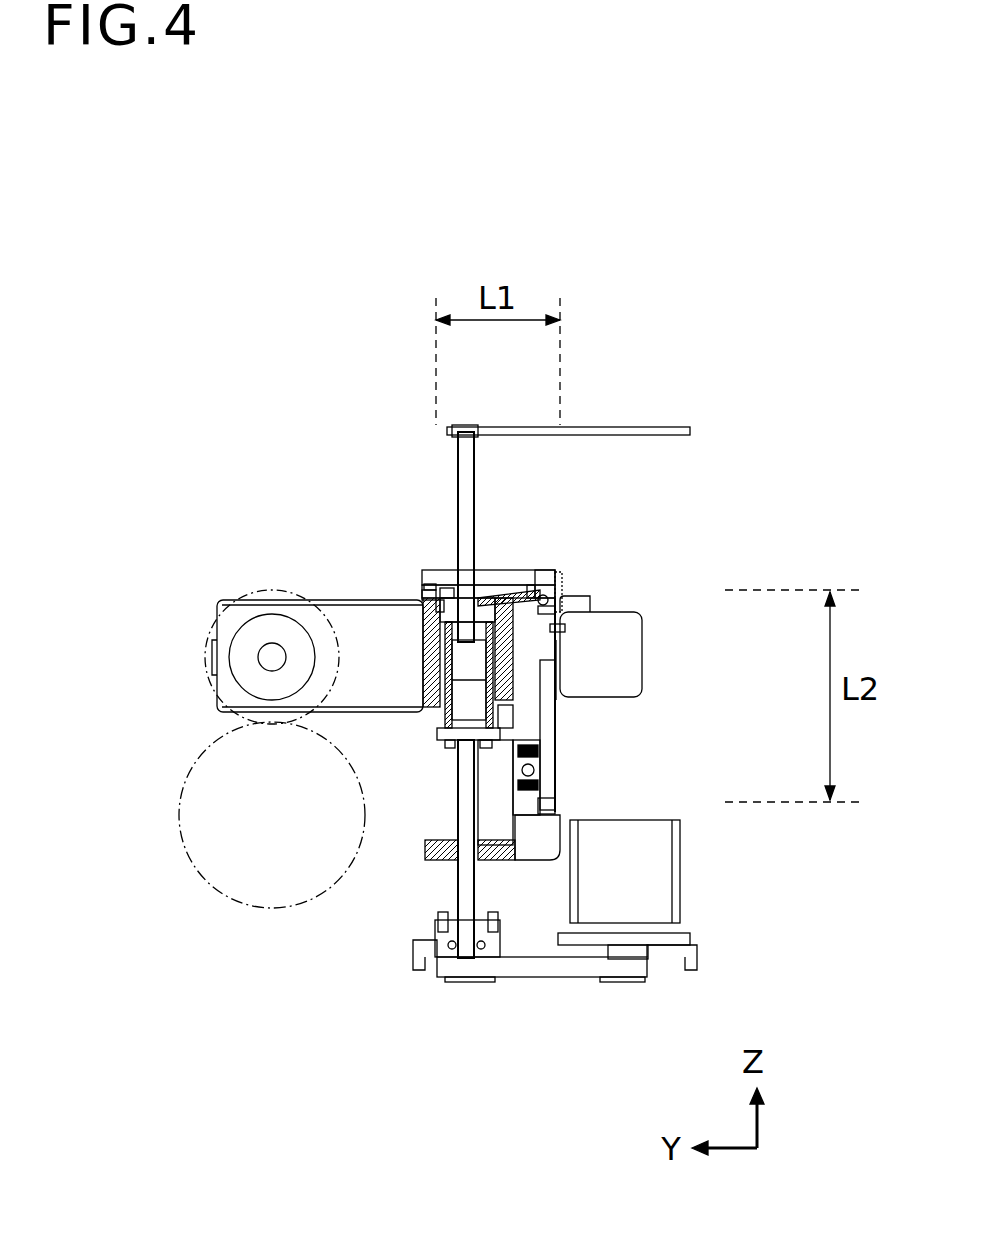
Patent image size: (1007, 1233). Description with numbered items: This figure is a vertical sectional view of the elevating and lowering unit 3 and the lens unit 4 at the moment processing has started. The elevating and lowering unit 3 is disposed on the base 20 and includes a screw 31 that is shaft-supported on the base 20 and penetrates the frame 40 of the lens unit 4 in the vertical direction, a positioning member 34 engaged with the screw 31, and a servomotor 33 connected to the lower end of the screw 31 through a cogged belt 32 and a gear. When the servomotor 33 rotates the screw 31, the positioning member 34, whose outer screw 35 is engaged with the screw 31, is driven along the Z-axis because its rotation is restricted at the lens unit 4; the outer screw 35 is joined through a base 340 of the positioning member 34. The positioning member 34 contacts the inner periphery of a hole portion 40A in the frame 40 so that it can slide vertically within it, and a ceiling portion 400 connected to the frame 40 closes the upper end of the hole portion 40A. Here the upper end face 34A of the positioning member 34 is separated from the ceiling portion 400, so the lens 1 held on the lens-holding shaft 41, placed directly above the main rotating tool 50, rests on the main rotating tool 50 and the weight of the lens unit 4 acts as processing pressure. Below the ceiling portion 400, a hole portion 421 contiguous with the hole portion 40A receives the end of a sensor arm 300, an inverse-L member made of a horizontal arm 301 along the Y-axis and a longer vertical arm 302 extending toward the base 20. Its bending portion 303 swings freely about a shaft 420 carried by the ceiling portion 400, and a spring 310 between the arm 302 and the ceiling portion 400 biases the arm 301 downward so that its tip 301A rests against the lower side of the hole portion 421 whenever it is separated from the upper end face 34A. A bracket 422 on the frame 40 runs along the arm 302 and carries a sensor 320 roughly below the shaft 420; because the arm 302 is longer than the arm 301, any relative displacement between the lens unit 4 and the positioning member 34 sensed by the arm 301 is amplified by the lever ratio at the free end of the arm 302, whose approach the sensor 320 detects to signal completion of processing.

The lens 1 is at (215, 628).
The elevating and lowering unit 3 is at (745, 728).
The lens unit 4 is at (348, 596).
The base 20 is at (697, 952).
The screw 31 is at (458, 800).
The cogged belt 32 is at (520, 980).
The servomotor (Z-axis motor) 33 is at (680, 842).
The positioning member 34 is at (445, 725).
The upper end face 34A is at (440, 605).
The outer screw 35 is at (472, 700).
The frame 40 is at (422, 640).
The hole portion 40A is at (488, 585).
The lens-holding shaft 41 is at (268, 645).
The main rotating tool 50 is at (188, 856).
The sensor arm 300 is at (565, 655).
The arm 301 is at (500, 598).
The tip 301A is at (430, 590).
The arm 302 is at (557, 770).
The bending portion 303 is at (560, 575).
The spring 310 is at (565, 600).
The sensor 320 is at (548, 805).
The base 340 is at (458, 742).
The ceiling portion 400 is at (446, 592).
The shaft 420 is at (545, 585).
The hole portion 421 is at (425, 597).
The bracket 422 is at (537, 850).